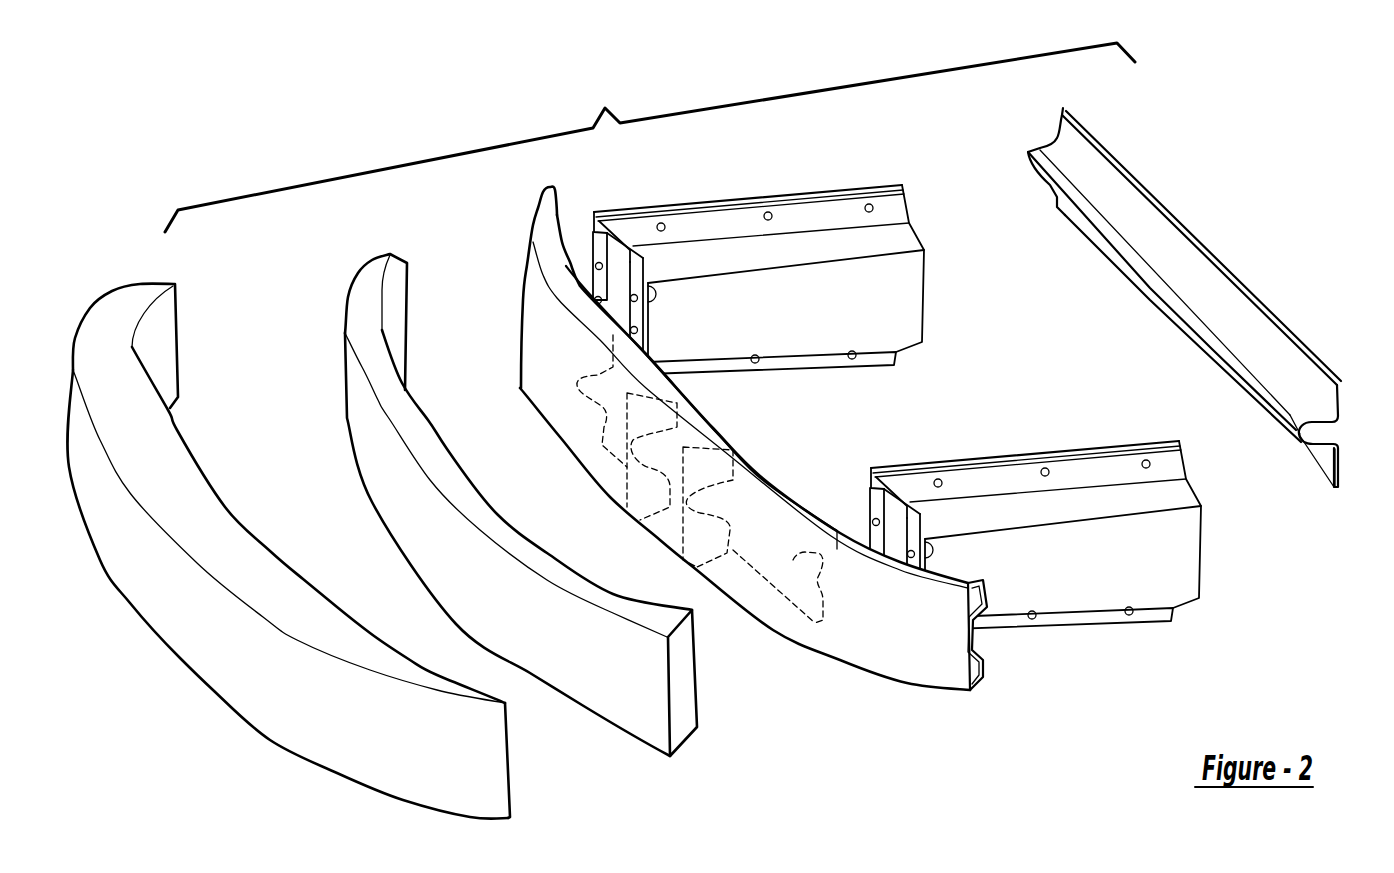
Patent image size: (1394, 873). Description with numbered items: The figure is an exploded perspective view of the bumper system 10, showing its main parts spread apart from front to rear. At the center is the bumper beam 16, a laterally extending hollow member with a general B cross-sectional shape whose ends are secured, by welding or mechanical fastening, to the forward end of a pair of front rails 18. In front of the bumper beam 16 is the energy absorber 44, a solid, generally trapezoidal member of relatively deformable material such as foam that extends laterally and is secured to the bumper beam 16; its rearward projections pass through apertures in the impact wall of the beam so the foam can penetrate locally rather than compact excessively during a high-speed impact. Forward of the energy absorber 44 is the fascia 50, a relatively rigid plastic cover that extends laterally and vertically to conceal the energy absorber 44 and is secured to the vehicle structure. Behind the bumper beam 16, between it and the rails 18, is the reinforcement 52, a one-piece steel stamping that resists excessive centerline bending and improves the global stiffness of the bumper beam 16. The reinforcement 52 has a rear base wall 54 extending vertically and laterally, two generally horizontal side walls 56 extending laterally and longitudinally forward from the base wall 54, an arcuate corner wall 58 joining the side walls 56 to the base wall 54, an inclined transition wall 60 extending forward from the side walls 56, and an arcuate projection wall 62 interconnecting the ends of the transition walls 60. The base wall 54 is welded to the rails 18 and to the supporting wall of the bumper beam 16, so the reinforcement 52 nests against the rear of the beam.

The bumper system 10 is at (350, 118).
The bumper beam 16 is at (990, 678).
The front rails 18 is at (806, 244).
The energy absorber 44 is at (635, 697).
The fascia 50 is at (213, 668).
The reinforcement 52 is at (1064, 112).
The base wall 54 is at (1340, 402).
The side walls 56 is at (1313, 420).
The corner wall 58 is at (1338, 443).
The transition wall 60 is at (1296, 428).
The projection wall 62 is at (1297, 438).